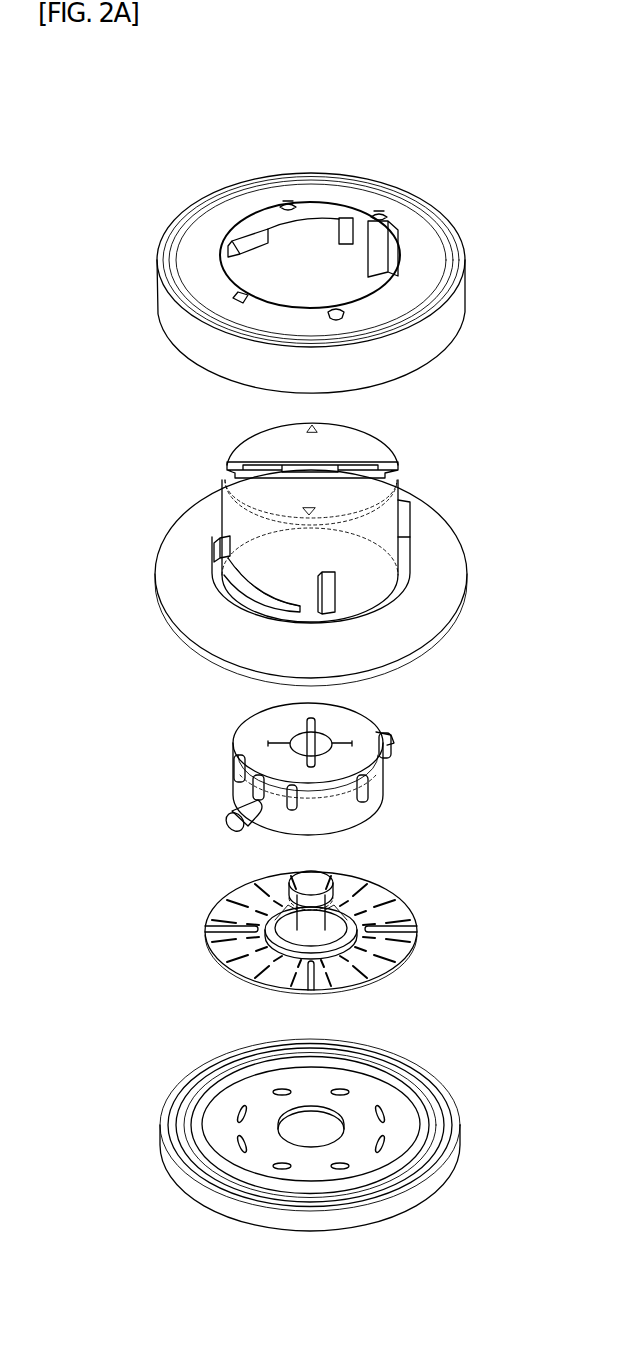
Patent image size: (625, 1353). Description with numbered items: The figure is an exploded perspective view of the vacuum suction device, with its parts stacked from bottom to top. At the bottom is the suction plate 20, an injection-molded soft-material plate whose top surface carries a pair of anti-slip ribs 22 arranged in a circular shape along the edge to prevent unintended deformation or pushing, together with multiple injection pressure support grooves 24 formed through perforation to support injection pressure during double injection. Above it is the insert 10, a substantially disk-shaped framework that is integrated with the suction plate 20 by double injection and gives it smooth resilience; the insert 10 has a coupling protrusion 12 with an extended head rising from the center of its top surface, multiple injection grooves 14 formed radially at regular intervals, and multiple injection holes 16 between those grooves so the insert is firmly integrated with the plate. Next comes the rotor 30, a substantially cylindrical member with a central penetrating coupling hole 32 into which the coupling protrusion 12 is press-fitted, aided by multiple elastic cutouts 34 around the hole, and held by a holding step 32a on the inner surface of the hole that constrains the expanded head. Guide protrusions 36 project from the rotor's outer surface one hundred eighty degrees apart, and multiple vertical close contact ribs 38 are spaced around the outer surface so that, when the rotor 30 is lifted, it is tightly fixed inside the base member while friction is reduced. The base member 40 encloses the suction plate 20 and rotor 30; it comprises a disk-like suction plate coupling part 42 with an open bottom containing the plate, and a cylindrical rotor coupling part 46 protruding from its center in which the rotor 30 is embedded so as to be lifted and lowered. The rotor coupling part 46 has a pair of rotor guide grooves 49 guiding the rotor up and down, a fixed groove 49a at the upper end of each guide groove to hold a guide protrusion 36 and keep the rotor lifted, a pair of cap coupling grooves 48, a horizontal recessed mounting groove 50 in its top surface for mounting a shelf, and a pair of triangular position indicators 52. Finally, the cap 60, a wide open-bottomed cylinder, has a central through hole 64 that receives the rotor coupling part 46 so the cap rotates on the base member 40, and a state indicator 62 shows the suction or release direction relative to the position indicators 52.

The insert 10 is at (293, 916).
The coupling protrusion 12 is at (318, 872).
The injection grooves 14 is at (412, 920).
The injection holes 16 is at (393, 945).
The suction plate 20 is at (291, 1135).
The anti-slip ribs 22 is at (418, 1085).
The injection pressure support grooves 24 is at (352, 1170).
The rotor 30 is at (291, 768).
The coupling hole 32 is at (324, 724).
The holding step 32a is at (325, 738).
The elastic cutouts 34 is at (277, 740).
The guide protrusions 36 is at (210, 785).
The close contact ribs 38 is at (385, 760).
The base member 40 is at (277, 541).
The suction plate coupling part 42 is at (430, 535).
The rotor coupling part 46 is at (232, 508).
The cap coupling grooves 48 is at (335, 595).
The rotor guide grooves 49 is at (260, 588).
The fixed groove 49a is at (222, 560).
The mounting groove 50 is at (325, 456).
The position indicators 52 is at (360, 452).
The cap 60 is at (297, 262).
The state indicator 62 is at (290, 205).
The through hole 64 is at (350, 276).